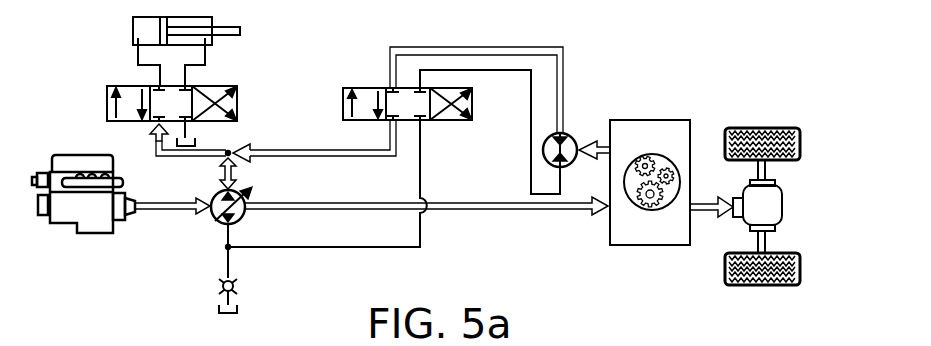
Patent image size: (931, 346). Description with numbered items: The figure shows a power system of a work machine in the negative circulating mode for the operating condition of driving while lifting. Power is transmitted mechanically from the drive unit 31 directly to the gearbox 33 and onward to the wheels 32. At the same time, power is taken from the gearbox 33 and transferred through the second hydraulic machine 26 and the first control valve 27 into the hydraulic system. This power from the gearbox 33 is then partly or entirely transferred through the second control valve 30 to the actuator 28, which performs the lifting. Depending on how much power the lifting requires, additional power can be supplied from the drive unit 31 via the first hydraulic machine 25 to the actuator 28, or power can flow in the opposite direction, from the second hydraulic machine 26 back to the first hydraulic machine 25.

The first hydraulic machine 25 is at (222, 222).
The second hydraulic machine 26 is at (577, 137).
The first control valve 27 is at (357, 88).
The actuator 28 is at (133, 30).
The second control valve 30 is at (107, 103).
The drive unit 31 is at (92, 233).
The wheels 32 is at (760, 286).
The gearbox 33 is at (643, 247).